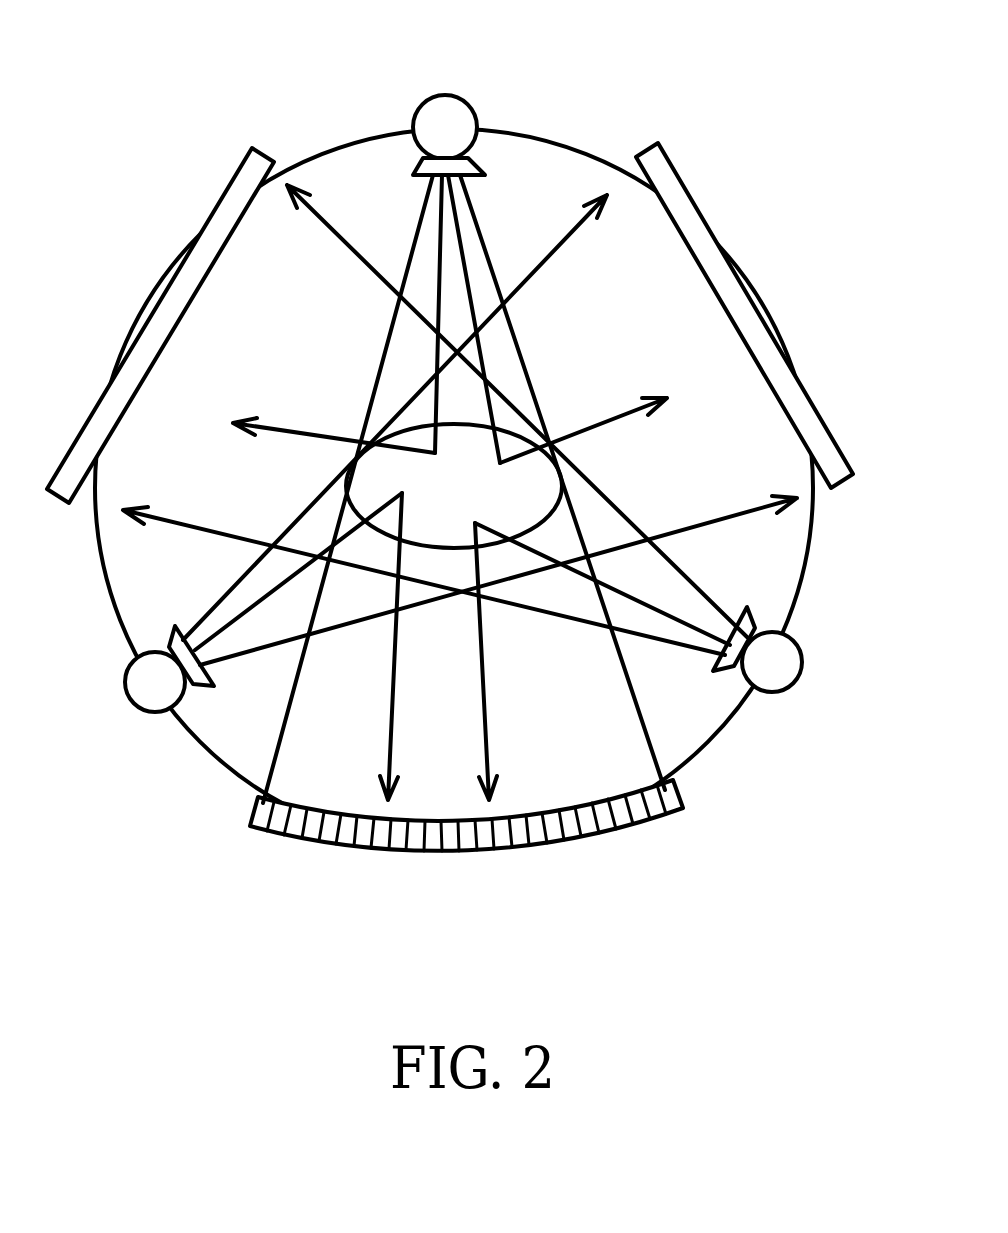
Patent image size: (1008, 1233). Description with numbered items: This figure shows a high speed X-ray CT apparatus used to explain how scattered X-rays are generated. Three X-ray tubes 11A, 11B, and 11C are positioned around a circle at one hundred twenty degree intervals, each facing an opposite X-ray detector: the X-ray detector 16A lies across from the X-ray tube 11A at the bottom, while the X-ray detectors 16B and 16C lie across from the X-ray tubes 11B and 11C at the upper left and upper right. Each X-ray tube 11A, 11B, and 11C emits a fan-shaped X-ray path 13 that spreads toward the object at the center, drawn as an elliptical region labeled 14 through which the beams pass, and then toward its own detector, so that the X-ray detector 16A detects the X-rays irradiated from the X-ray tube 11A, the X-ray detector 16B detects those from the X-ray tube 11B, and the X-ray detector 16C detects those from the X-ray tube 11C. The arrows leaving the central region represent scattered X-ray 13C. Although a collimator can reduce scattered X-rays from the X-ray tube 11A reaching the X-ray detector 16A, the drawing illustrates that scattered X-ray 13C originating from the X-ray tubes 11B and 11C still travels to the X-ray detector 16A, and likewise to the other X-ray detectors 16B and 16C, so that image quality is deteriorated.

The X-ray tube 11A is at (456, 95).
The X-ray tube 11B is at (803, 675).
The X-ray tube 11C is at (130, 706).
The fan-shaped X-ray path 13 is at (523, 352).
The scattered X-ray 13C is at (283, 427).
The rotating mirror 14 is at (377, 482).
The X-ray detector 16A is at (573, 845).
The X-ray detector 16B is at (140, 312).
The X-ray detector 16C is at (768, 300).